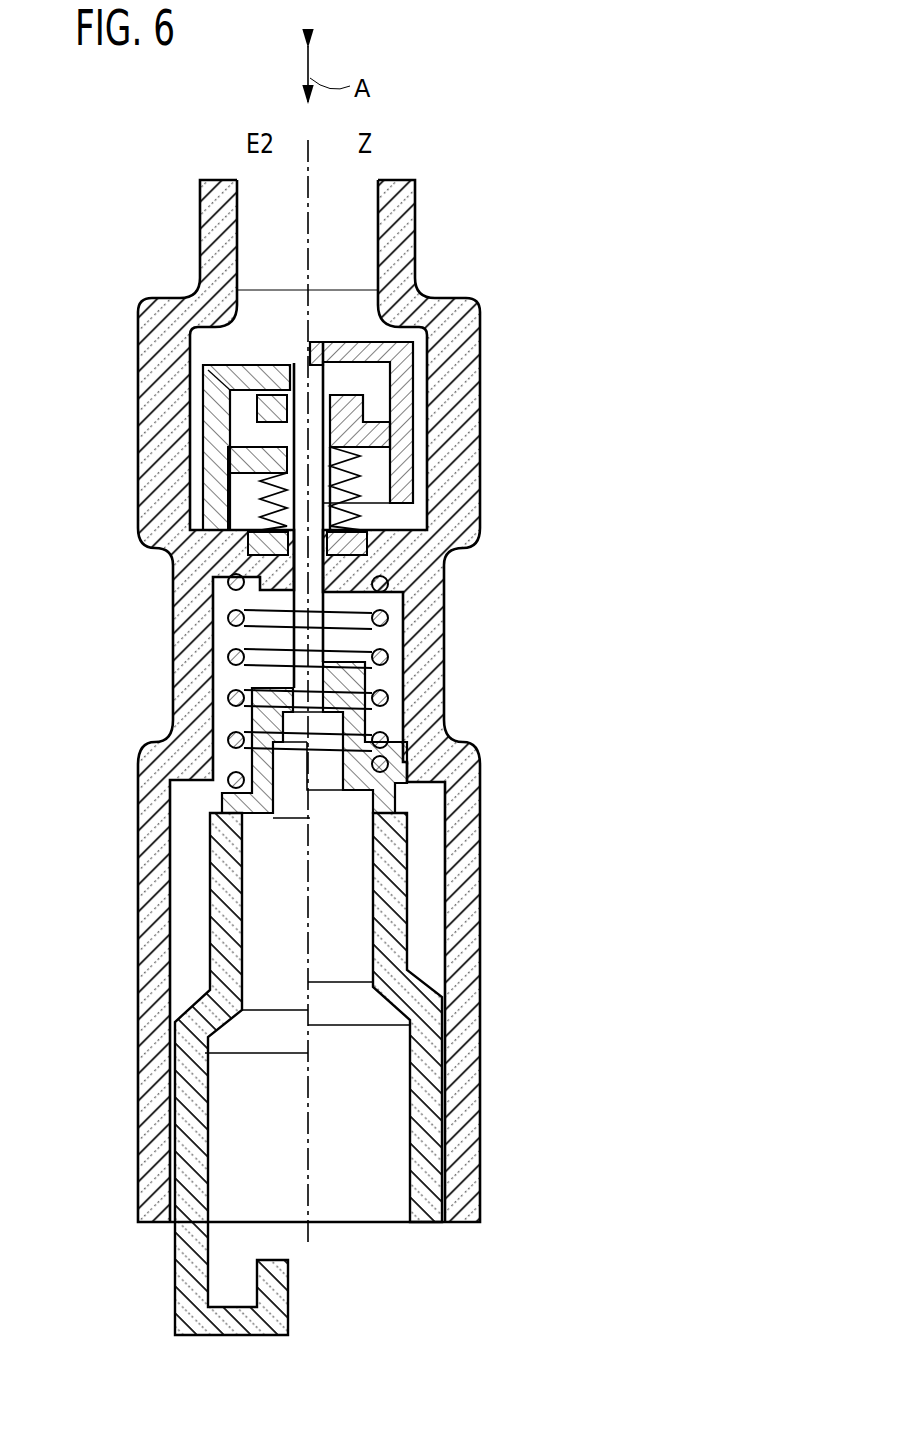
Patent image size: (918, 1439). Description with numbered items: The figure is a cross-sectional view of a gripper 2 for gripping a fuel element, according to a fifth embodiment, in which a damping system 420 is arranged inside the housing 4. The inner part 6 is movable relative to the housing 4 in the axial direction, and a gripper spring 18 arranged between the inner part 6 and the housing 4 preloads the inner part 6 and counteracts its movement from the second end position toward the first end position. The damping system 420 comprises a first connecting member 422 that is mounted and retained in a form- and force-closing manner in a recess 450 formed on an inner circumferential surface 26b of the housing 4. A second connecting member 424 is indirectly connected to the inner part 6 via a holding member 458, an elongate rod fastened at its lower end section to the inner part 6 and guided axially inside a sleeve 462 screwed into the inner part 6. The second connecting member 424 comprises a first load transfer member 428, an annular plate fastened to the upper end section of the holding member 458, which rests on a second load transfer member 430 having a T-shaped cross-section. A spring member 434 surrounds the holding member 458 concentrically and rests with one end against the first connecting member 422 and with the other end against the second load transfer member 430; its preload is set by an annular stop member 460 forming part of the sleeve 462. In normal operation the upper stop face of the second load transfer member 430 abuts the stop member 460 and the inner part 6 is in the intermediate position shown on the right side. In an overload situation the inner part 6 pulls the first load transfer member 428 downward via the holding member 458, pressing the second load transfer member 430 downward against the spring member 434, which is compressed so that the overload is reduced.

The gripper 2 is at (540, 211).
The housing 4 is at (460, 330).
The inner part 6 is at (222, 946).
The gripper spring 18 is at (388, 657).
The inner circumferential surface 26b is at (248, 566).
The damping system 420 is at (198, 371).
The first connecting member 422 is at (425, 533).
The second connecting member 424 is at (419, 363).
The first load transfer member 428 is at (372, 340).
The second load transfer member 430 is at (405, 400).
The spring member 434 is at (388, 500).
The recess 450 is at (380, 570).
The holding member 458 is at (245, 462).
The stop member 460 is at (258, 410).
The sleeve 462 is at (300, 460).